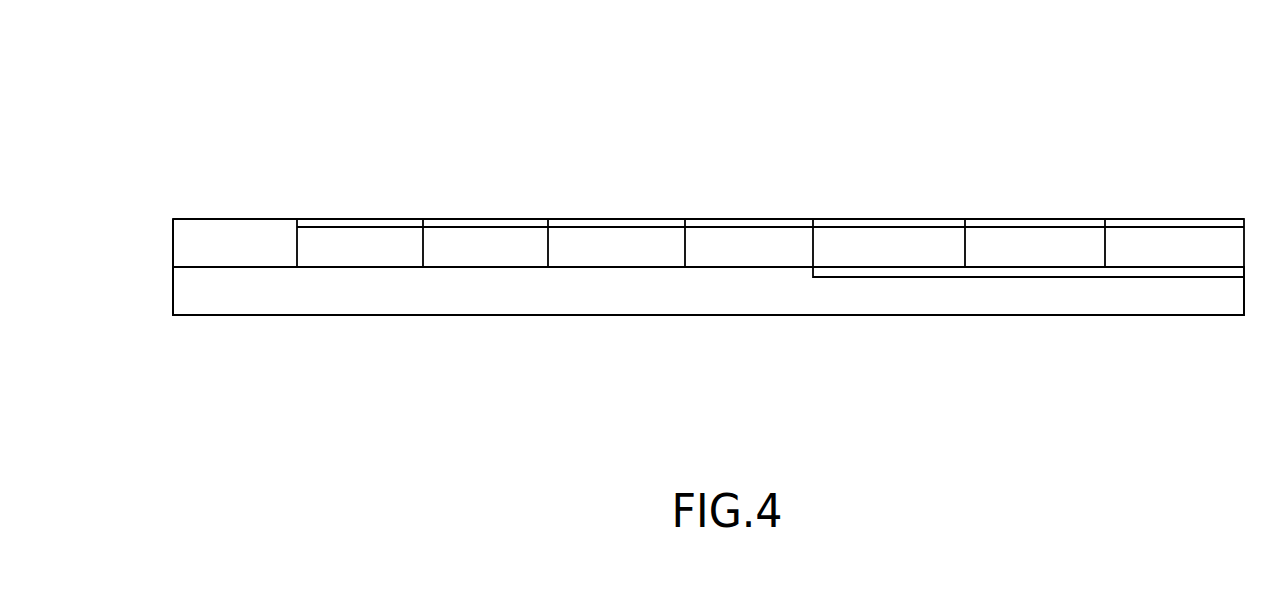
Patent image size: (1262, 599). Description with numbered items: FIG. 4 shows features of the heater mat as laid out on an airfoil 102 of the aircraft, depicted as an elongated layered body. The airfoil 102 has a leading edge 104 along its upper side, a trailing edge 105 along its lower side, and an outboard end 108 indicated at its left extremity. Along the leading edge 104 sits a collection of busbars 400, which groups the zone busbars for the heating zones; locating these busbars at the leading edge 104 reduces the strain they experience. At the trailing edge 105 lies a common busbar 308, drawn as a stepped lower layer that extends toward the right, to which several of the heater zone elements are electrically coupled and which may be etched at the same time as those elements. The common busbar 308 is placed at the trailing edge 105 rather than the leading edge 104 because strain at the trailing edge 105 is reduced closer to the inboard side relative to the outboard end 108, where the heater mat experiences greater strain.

The airfoil 102 is at (483, 132).
The leading edge 104 is at (566, 219).
The collection of busbars 400 is at (628, 227).
The trailing edge 105 is at (567, 315).
The common busbar 308 is at (909, 267).
The outboard end 108 is at (166, 232).